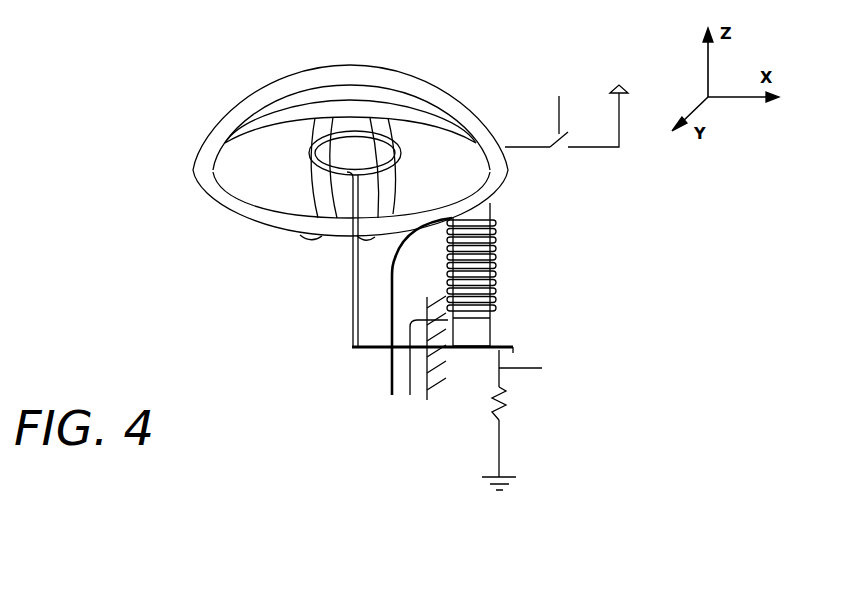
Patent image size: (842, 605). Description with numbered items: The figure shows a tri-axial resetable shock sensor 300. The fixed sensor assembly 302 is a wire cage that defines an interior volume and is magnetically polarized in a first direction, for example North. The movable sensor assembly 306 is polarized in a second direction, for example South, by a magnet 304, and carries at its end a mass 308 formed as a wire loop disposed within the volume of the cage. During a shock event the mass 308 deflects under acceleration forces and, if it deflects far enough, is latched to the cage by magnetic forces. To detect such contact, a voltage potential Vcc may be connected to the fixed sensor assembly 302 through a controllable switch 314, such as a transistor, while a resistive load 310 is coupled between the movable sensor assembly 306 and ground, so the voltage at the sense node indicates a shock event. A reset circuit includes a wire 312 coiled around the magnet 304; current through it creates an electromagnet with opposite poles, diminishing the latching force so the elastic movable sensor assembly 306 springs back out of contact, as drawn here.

The sensor 300 is at (170, 121).
The fixed sensor assembly 302 is at (384, 72).
The magnet 304 is at (490, 327).
The movable sensor assembly 306 is at (353, 323).
The mass 308 is at (399, 149).
The resistive load 310 is at (507, 407).
The wire 312 is at (390, 381).
The controllable switch 314 is at (562, 150).